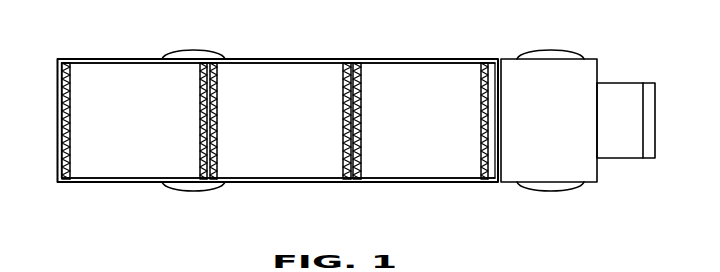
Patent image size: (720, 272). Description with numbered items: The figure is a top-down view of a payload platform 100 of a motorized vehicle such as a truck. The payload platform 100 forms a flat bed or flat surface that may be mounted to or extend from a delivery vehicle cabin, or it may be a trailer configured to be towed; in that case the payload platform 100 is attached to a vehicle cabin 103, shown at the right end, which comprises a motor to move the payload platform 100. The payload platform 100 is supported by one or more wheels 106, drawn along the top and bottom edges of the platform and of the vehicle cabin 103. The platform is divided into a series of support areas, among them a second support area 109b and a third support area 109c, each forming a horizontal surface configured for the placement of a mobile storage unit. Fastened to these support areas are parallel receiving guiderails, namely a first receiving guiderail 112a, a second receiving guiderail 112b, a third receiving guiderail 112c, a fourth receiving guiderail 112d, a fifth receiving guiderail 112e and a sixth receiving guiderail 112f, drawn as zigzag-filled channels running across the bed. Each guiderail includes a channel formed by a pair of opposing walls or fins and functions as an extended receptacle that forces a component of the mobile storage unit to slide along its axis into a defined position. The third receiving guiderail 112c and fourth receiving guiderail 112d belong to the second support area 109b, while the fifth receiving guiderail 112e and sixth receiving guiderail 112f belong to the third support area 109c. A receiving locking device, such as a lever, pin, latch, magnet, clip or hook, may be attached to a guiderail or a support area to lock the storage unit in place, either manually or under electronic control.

The payload platform 100 is at (64, 227).
The vehicle cabin 103 is at (598, 58).
The wheels 106 is at (191, 48).
The second support area 109b is at (277, 67).
The third support area 109c is at (418, 67).
The first receiving guiderail 112a is at (481, 110).
The second receiving guiderail 112b is at (362, 78).
The third receiving guiderail 112c is at (343, 105).
The fourth receiving guiderail 112d is at (218, 78).
The fifth receiving guiderail 112e is at (200, 105).
The sixth receiving guiderail 112f is at (70, 88).